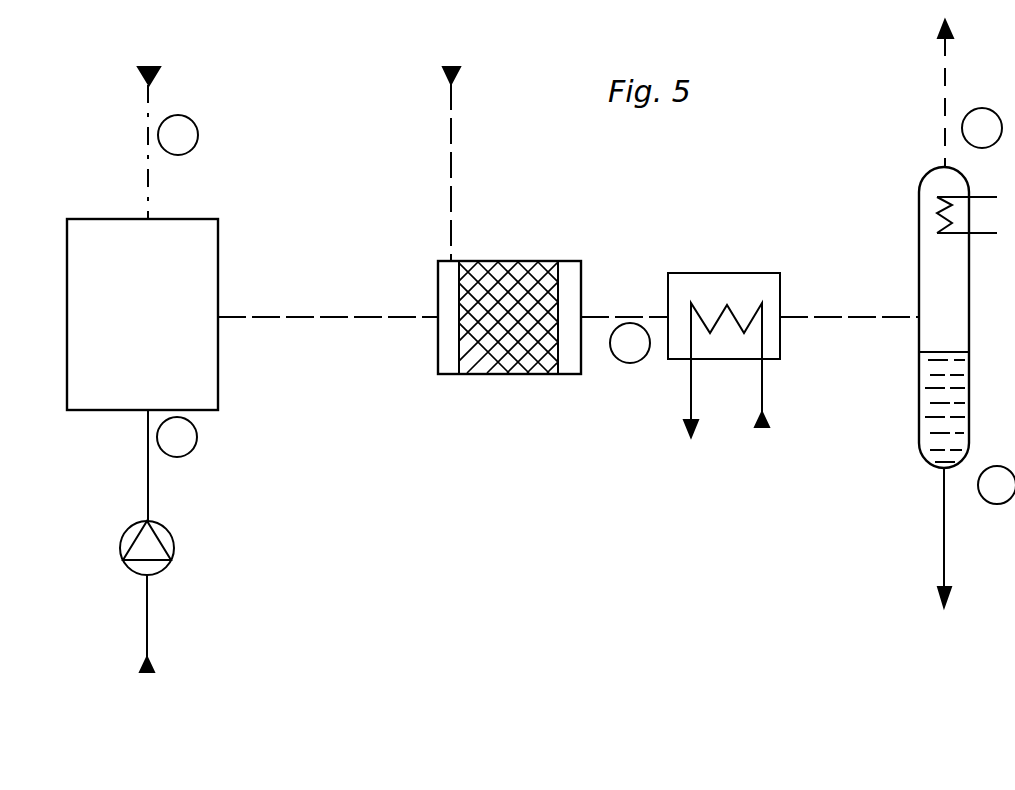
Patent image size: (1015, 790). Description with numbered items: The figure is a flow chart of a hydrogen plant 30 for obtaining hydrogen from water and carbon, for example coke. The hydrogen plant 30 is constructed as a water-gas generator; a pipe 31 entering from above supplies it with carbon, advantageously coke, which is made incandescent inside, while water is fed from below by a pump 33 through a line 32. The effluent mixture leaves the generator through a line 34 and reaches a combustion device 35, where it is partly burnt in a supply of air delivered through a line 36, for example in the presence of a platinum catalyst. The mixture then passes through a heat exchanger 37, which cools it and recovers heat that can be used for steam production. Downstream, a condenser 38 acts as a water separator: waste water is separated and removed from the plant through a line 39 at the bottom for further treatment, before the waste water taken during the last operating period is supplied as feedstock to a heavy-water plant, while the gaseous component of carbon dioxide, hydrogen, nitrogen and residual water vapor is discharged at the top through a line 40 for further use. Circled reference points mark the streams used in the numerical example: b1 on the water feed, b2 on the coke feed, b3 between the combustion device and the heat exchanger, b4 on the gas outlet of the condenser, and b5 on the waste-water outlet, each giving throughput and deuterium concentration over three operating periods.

The hydrogen plant 30 is at (67, 348).
The pipe 31 is at (148, 135).
The line 32 is at (148, 477).
The pump 33 is at (175, 549).
The line 34 is at (318, 317).
The combustion device 35 is at (505, 261).
The line 36 is at (451, 128).
The heat exchanger 37 is at (725, 273).
The condenser 38 is at (969, 306).
The line 39 is at (944, 523).
The top outlet line 40 is at (945, 100).
The reference point b1 is at (148, 443).
The reference point b2 is at (148, 133).
The reference point b3 is at (623, 317).
The reference point b4 is at (945, 131).
The reference point b5 is at (944, 483).